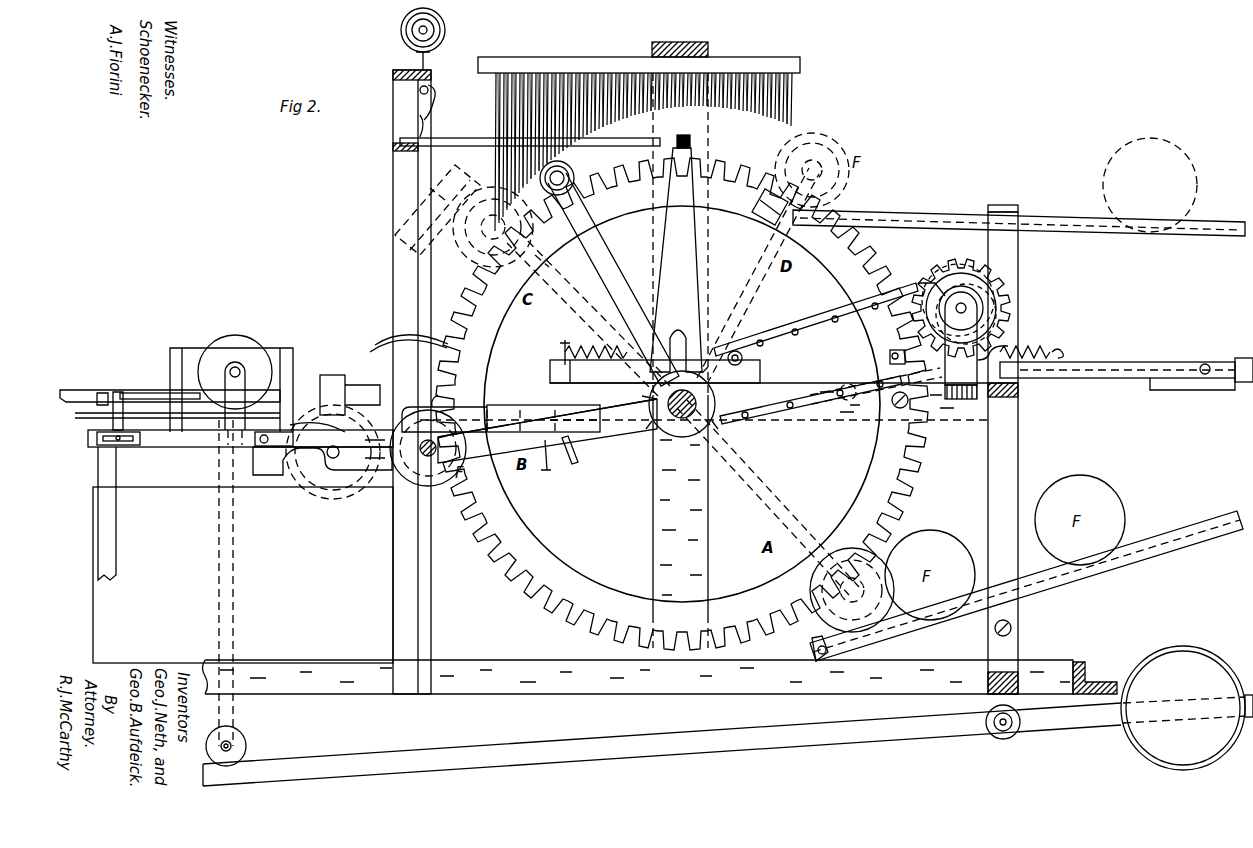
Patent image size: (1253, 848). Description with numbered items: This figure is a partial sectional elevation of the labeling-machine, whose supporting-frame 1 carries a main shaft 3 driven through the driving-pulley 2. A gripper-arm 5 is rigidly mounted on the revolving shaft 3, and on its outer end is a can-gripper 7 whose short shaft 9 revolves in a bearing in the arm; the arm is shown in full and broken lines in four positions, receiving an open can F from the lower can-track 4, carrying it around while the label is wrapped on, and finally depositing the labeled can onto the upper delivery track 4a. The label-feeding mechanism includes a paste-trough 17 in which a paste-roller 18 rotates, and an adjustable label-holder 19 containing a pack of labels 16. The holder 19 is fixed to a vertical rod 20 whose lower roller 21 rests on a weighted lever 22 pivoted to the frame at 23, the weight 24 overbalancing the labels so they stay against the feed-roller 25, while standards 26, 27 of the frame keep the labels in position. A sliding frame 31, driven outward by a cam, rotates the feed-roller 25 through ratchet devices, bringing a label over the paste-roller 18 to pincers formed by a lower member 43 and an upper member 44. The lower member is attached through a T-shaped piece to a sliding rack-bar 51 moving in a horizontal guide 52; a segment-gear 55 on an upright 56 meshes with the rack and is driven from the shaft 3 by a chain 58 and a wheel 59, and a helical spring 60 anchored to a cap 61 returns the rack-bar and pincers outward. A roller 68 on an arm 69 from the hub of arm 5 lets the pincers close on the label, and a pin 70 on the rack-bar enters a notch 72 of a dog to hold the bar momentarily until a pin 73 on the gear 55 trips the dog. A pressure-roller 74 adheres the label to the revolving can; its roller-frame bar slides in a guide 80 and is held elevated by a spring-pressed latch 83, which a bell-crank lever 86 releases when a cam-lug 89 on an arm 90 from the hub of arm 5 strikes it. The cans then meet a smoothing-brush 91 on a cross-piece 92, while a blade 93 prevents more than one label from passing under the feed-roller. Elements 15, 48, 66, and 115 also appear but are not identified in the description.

The supporting-frame 1 is at (700, 128).
The driving-pulley 2 is at (852, 590).
The main shaft 3 is at (650, 428).
The can-track 4 is at (1028, 590).
The delivery can-track 4a is at (1040, 222).
The gripper-arm 5 is at (648, 381).
The can-gripper 7 is at (591, 210).
The gripper shaft 9 is at (415, 448).
The main gear wheel 15 is at (682, 404).
The label 16 is at (500, 405).
The paste-trough 17 is at (243, 555).
The paste-roller 18 is at (322, 452).
The label-holder 19 is at (88, 418).
The vertical rod 20 is at (236, 568).
The roller 21 is at (233, 741).
The weighted lever 22 is at (662, 744).
The lever pivot 23 is at (994, 720).
The weight 24 is at (1187, 708).
The feed-roller 25 is at (235, 372).
The standard 26 is at (177, 405).
The standard 27 is at (235, 403).
The sliding frame 31 is at (172, 366).
The lower pincer member 43 is at (545, 460).
The upper pincer member 44 is at (528, 405).
The block 48 is at (300, 415).
The sliding rack-bar 51 is at (1126, 369).
The horizontal guide 52 is at (876, 385).
The segment-gear 55 is at (934, 266).
The upright 56 is at (961, 345).
The chain 58 is at (829, 353).
The wheel 59 is at (990, 302).
The helical spring 60 is at (808, 343).
The cap 61 is at (1066, 356).
The pin 66 is at (576, 458).
The roller 68 is at (566, 168).
The arm 69 is at (613, 279).
The pin 70 is at (1206, 364).
The notch 72 is at (1150, 388).
The pin 73 is at (886, 350).
The pressure-roller 74 is at (489, 227).
The guide 80 is at (419, 351).
The spring-pressed latch 83 is at (420, 100).
The bell-crank lever 86 is at (604, 142).
The cam-lug 89 is at (678, 136).
The arm 90 is at (676, 260).
The smoothing-brush 91 is at (616, 66).
The cross-piece 92 is at (682, 42).
The blade 93 is at (102, 402).
The lever 115 is at (343, 388).